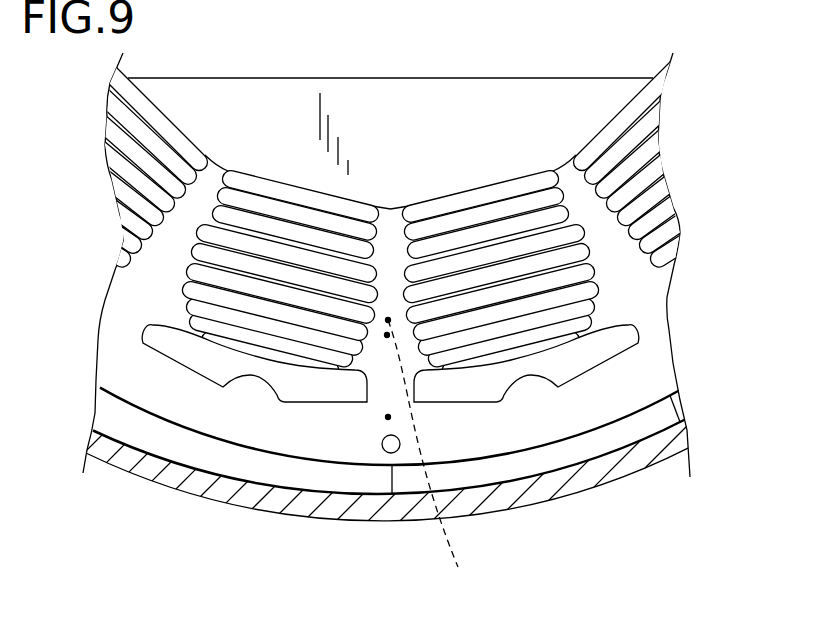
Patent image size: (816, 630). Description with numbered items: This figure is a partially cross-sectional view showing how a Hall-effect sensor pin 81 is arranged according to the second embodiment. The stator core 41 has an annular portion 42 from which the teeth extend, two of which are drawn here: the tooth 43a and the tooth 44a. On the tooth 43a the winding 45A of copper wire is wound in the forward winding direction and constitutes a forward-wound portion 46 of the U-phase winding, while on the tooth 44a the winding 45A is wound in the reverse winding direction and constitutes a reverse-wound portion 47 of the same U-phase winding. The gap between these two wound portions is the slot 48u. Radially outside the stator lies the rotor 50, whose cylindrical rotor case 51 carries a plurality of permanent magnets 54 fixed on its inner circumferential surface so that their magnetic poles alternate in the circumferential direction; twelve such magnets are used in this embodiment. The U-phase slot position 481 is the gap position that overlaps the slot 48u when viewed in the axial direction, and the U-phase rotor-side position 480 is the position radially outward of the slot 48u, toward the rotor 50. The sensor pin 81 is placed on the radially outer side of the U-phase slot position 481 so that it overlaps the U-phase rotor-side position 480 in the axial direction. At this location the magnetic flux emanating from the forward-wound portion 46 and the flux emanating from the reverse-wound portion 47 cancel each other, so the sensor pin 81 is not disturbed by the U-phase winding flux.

The stator core 41 is at (385, 107).
The annular portion 42 is at (413, 130).
The tooth 43a is at (577, 363).
The tooth 44a is at (203, 363).
The winding 45A is at (423, 355).
The forward-wound portion 46 is at (627, 343).
The reverse-wound portion 47 is at (287, 313).
The slot 48u is at (387, 335).
The U-phase rotor-side position 480 is at (388, 417).
The U-phase slot position 481 is at (432, 457).
The rotor 50 is at (493, 520).
The rotor case 51 is at (552, 497).
The permanent magnet 54 is at (265, 465).
The sensor pin 81 is at (398, 452).